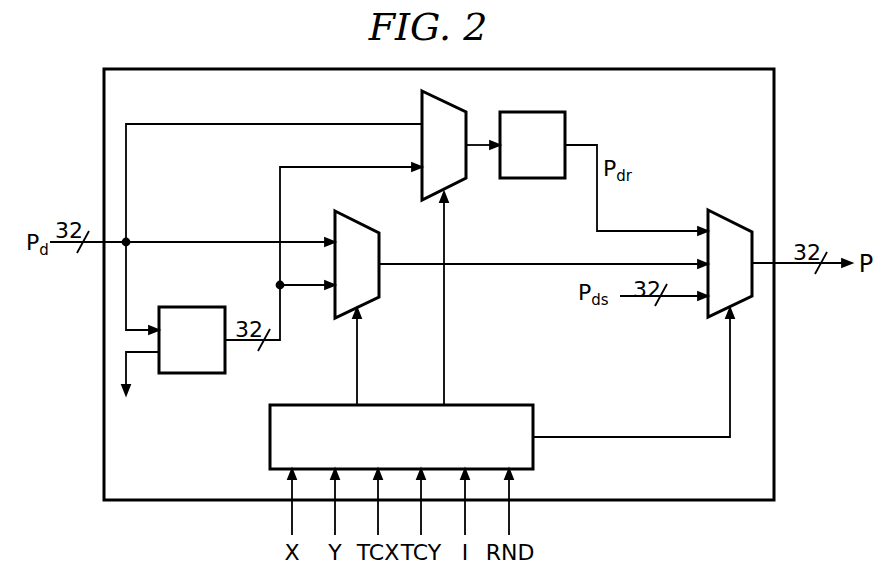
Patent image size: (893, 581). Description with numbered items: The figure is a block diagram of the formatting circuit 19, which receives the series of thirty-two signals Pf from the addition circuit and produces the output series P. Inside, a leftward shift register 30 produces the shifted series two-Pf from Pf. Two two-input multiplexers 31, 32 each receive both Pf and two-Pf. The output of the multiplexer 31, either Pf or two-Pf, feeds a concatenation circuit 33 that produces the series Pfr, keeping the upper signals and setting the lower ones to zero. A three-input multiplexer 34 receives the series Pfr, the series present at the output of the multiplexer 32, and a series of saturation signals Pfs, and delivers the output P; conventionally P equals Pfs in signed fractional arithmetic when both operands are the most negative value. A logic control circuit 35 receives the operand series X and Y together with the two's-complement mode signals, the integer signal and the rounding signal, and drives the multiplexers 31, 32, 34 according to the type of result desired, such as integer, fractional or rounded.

The formatting circuit 19 is at (248, 69).
The leftward shift register 30 is at (183, 375).
The multiplexer 31 is at (420, 110).
The multiplexer 32 is at (381, 275).
The concatenation circuit 33 is at (537, 180).
The multiplexer 34 is at (734, 210).
The logic control circuit 35 is at (270, 432).